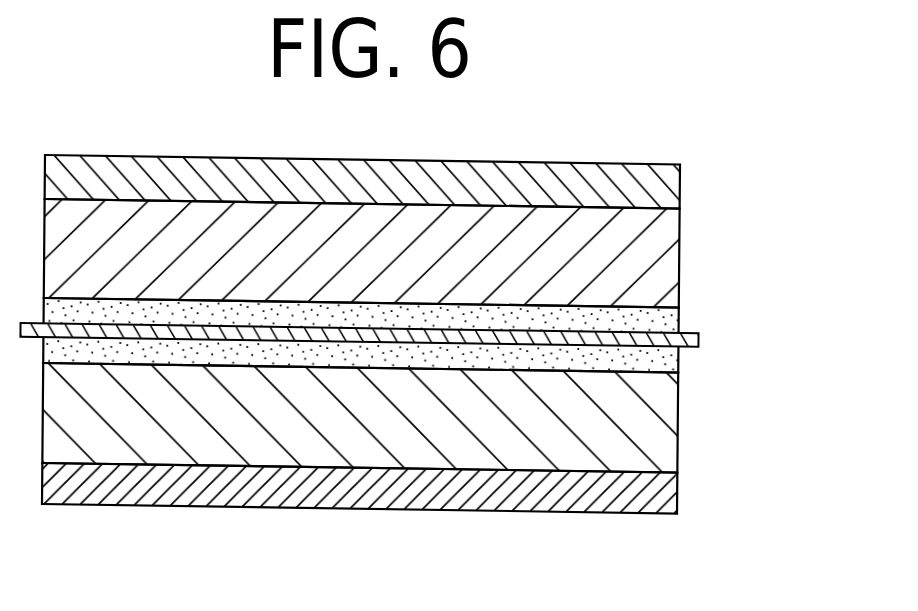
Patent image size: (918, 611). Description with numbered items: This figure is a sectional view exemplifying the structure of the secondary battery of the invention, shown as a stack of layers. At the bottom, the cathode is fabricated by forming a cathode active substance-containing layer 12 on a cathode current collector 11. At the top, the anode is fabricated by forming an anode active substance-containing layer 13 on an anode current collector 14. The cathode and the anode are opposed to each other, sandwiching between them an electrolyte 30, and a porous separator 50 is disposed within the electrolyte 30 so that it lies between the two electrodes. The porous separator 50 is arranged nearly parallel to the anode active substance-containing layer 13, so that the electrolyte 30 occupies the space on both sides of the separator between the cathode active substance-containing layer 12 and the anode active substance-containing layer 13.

The cathode current collector 11 is at (678, 482).
The cathode active substance-containing layer 12 is at (678, 413).
The anode active substance-containing layer 13 is at (681, 248).
The anode current collector 14 is at (681, 178).
The electrolyte 30 is at (681, 312).
The porous separator 50 is at (701, 342).